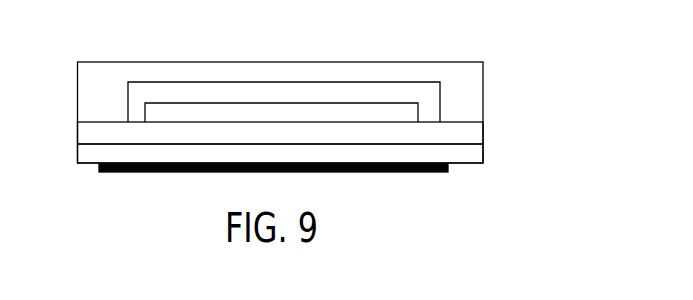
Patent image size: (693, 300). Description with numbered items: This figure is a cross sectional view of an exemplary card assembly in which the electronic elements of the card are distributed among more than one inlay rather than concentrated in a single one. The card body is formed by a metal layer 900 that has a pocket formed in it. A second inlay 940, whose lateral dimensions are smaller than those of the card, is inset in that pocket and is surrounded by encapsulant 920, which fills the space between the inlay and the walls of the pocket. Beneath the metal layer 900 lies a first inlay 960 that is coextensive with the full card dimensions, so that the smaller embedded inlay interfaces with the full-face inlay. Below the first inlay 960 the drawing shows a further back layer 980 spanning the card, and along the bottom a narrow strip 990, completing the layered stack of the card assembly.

The metal layer 900 is at (475, 70).
The encapsulant 920 is at (430, 98).
The second inlay 940 is at (418, 113).
The first inlay 960 is at (440, 135).
The support layer 980 is at (483, 161).
The adhesive layer 990 is at (433, 172).